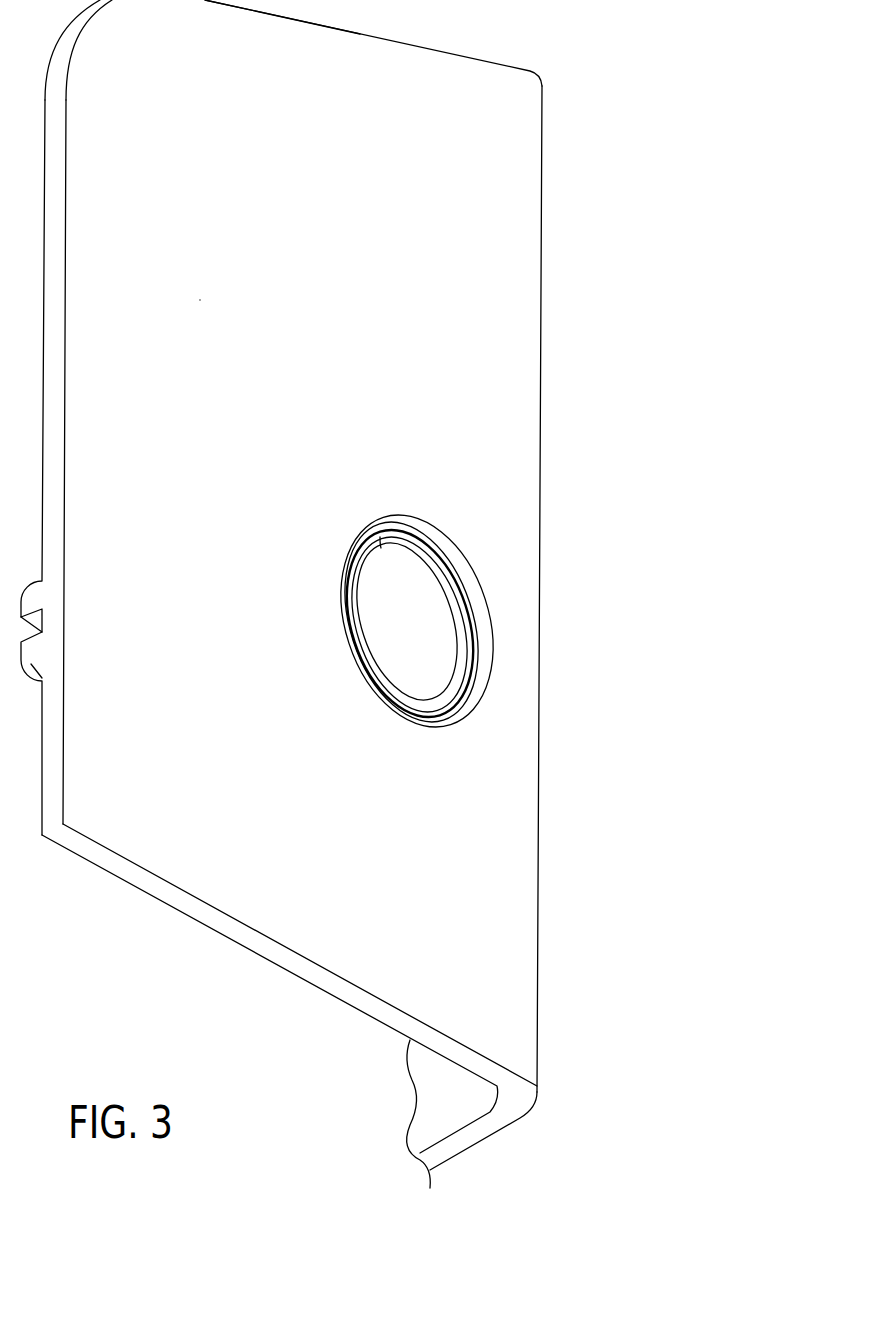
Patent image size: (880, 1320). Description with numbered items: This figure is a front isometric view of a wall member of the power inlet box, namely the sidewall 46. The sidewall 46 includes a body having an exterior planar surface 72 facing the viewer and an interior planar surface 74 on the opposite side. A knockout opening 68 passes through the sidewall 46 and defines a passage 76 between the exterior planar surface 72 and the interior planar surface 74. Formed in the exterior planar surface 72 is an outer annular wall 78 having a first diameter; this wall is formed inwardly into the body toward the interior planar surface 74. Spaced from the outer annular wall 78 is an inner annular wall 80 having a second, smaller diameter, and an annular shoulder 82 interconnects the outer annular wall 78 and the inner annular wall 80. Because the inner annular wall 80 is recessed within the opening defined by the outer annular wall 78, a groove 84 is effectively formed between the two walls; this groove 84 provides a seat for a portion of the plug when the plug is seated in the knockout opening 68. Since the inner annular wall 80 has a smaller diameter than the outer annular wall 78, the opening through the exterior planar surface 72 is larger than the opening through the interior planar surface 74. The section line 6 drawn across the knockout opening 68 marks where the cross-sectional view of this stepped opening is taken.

The sidewall 46 is at (565, 515).
The knockout opening 68 is at (460, 530).
The exterior planar surface 72 is at (407, 788).
The interior planar surface 74 is at (407, 120).
The passage 76 is at (425, 655).
The outer annular wall 78 is at (478, 598).
The inner annular wall 80 is at (380, 537).
The annular shoulder 82 is at (372, 525).
The groove 84 is at (487, 631).
The section line 6- 6 is at (334, 574).